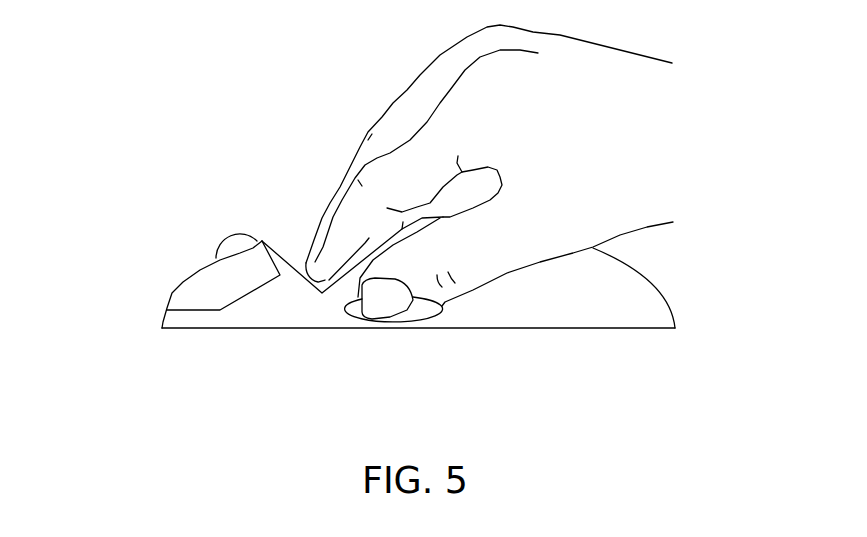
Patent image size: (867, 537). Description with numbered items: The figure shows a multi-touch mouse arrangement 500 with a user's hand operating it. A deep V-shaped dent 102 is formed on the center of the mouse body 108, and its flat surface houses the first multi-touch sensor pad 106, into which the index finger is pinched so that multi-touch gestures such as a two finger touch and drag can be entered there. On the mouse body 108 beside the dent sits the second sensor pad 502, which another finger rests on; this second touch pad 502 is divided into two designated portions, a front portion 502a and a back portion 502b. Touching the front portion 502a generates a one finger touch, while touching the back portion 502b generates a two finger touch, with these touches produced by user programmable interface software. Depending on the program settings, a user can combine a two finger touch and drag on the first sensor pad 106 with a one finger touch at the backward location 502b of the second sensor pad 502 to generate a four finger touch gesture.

The system with hand operating device 500 is at (150, 85).
The V-shaped dent 102 is at (274, 252).
The multi-touch sensor pad 106 is at (312, 268).
The mouse body 108 is at (193, 322).
The second sensor pad 502 is at (387, 314).
The front portion 502a is at (363, 305).
The back portion 502b is at (413, 308).